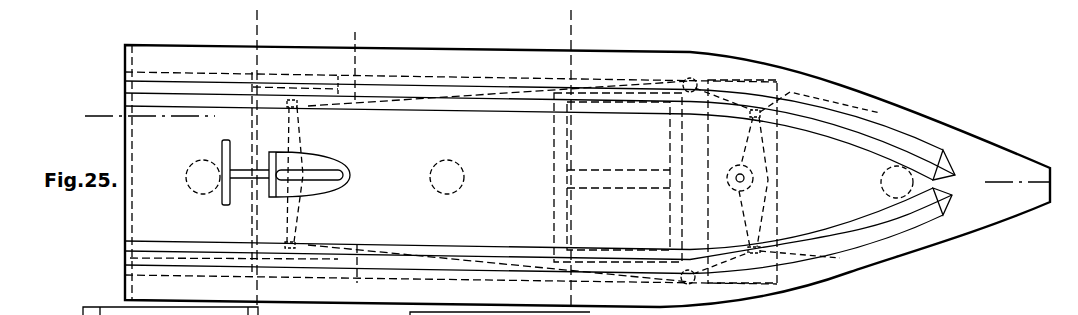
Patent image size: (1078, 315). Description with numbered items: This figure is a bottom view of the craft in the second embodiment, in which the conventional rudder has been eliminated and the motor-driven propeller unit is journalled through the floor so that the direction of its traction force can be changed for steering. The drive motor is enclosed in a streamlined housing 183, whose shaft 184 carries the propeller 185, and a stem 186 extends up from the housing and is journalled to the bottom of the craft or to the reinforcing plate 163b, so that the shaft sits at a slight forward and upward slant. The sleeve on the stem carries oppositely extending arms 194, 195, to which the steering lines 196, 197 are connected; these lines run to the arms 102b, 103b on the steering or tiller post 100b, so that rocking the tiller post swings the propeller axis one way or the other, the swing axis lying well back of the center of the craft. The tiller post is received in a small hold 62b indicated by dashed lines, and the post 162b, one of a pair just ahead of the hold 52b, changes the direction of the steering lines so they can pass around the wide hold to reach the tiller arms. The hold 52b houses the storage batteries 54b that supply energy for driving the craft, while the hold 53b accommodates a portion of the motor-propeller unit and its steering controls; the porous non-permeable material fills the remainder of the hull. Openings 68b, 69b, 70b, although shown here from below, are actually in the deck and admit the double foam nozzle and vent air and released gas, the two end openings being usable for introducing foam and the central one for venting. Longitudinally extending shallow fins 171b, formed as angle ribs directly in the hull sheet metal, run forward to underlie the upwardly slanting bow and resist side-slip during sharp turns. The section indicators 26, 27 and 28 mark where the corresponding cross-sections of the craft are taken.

The section line 26- 26 is at (73, 85).
The section line 27- 27 is at (237, 22).
The section line 28- 28 is at (544, 17).
The hold 52b is at (553, 162).
The hold 53b is at (345, 207).
The storage batteries 54b is at (566, 130).
The small hold 62b is at (714, 121).
The opening 68b is at (193, 193).
The opening 69b is at (445, 194).
The opening 70b is at (898, 166).
The tiller post 100b is at (738, 191).
The tiller post arm 102b is at (779, 97).
The tiller post arm 103b is at (762, 254).
The post 162b is at (690, 78).
The reinforcing plate 163b is at (250, 213).
The fin 171b is at (374, 96).
The streamlined housing 183 is at (345, 158).
The shaft 184 is at (246, 170).
The propeller 185 is at (222, 150).
The stem 186 is at (296, 181).
The arm 194 is at (297, 107).
The arm 195 is at (297, 246).
The steering line 196 is at (353, 58).
The steering line 197 is at (353, 273).